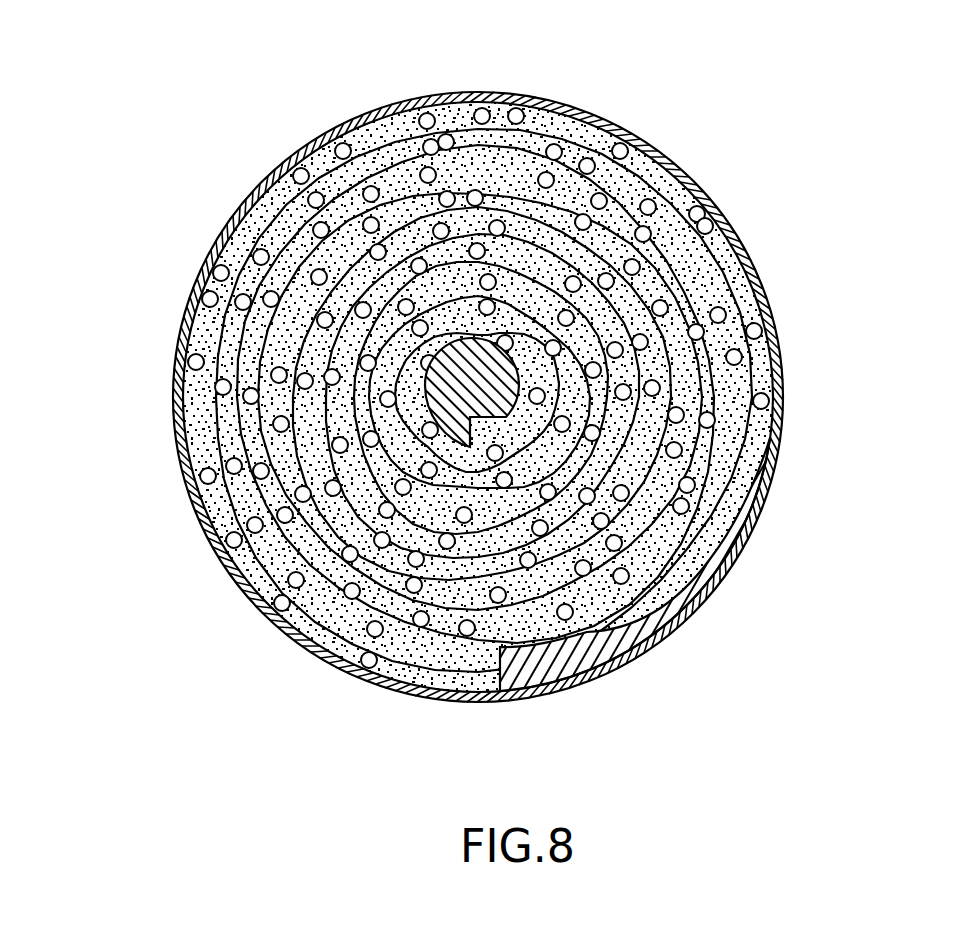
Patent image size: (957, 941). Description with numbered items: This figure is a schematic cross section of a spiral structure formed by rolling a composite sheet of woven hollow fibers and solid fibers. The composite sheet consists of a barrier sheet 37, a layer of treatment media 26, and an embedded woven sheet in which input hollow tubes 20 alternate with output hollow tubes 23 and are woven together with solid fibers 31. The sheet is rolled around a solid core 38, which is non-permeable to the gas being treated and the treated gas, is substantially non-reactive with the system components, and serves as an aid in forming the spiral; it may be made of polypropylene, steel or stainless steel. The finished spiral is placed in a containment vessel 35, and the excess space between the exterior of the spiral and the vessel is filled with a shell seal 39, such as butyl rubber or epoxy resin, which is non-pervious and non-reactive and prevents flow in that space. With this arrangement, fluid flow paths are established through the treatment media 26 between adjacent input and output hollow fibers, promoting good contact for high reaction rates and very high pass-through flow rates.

The input hollow tubes 20 is at (600, 165).
The output hollow tubes 23 is at (488, 165).
The treatment media 26 is at (700, 200).
The solid fibers 31 is at (257, 597).
The containment vessel 35 is at (172, 405).
The barrier sheet 37 is at (760, 402).
The solid core 38 is at (496, 412).
The shell seal 39 is at (648, 660).